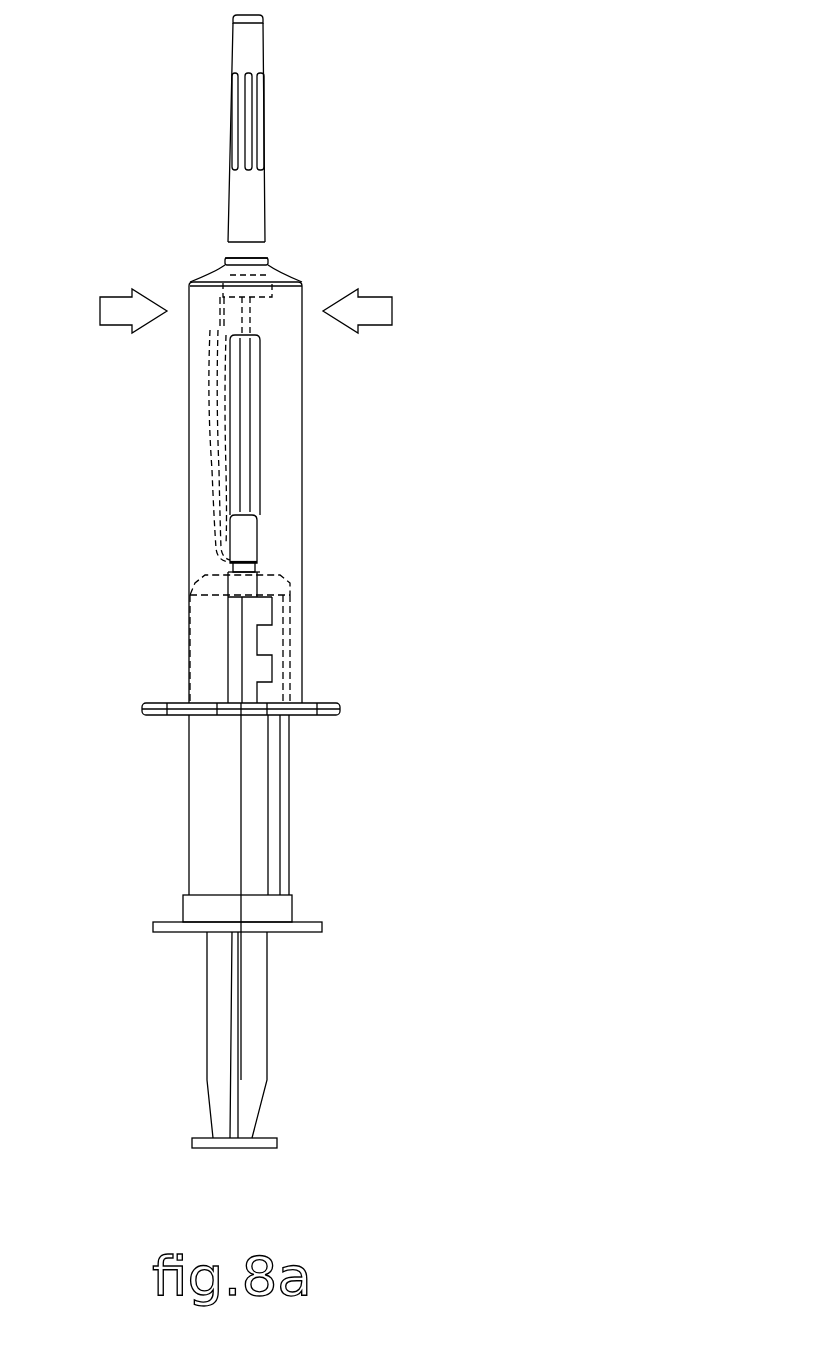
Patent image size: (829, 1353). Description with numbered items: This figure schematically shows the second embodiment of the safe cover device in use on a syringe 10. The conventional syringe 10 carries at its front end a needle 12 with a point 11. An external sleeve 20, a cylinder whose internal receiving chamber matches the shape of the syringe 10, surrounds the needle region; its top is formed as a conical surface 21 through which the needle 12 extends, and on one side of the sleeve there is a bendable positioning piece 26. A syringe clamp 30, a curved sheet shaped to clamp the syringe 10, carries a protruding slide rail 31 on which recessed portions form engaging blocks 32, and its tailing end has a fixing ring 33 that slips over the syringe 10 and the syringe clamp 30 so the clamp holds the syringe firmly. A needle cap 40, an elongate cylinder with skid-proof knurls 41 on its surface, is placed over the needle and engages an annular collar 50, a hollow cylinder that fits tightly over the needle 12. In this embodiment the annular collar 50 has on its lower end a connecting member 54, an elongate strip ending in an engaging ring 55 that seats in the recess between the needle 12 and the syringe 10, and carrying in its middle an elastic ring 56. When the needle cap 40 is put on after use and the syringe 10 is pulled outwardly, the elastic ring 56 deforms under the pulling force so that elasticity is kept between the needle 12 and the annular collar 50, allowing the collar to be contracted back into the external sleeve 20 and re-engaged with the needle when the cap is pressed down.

The syringe 10 is at (283, 858).
The point 11 is at (242, 412).
The needle 12 is at (248, 533).
The external sleeve 20 is at (287, 395).
The conical surface 21 is at (283, 270).
The bendable positioning piece 26 is at (235, 650).
The syringe clamp 30 is at (203, 792).
The protruding slide rail 31 is at (253, 795).
The engaging blocks 32 is at (265, 668).
The fixing ring 33 is at (198, 908).
The needle cap 40 is at (258, 40).
The skid-proof knurls 41 is at (265, 122).
The annular collar 50 is at (237, 252).
The connecting member 54 is at (218, 320).
The engaging ring 55 is at (247, 567).
The elastic ring 56 is at (200, 462).